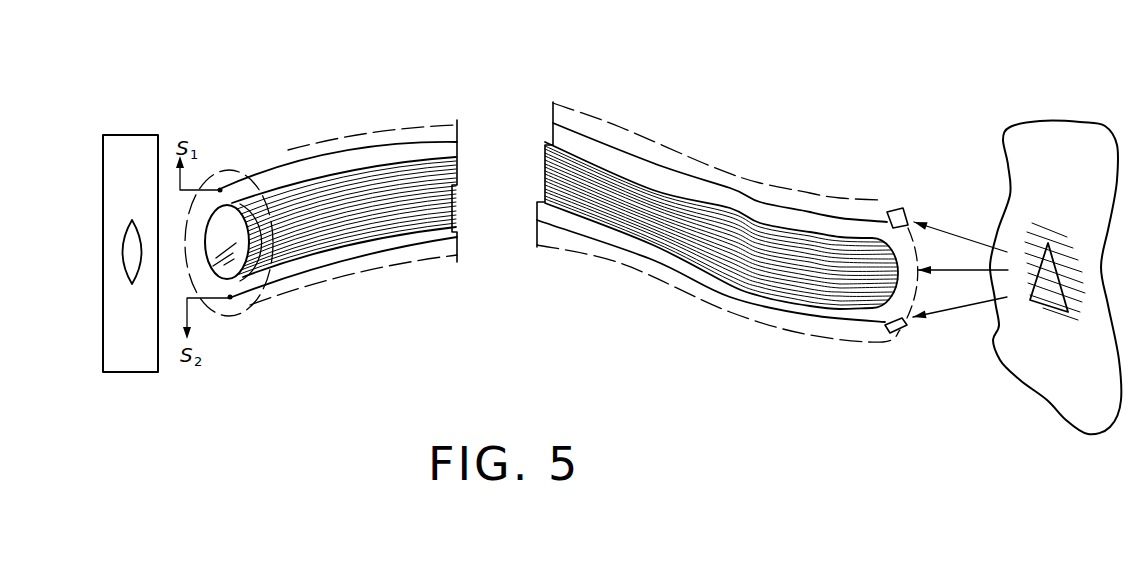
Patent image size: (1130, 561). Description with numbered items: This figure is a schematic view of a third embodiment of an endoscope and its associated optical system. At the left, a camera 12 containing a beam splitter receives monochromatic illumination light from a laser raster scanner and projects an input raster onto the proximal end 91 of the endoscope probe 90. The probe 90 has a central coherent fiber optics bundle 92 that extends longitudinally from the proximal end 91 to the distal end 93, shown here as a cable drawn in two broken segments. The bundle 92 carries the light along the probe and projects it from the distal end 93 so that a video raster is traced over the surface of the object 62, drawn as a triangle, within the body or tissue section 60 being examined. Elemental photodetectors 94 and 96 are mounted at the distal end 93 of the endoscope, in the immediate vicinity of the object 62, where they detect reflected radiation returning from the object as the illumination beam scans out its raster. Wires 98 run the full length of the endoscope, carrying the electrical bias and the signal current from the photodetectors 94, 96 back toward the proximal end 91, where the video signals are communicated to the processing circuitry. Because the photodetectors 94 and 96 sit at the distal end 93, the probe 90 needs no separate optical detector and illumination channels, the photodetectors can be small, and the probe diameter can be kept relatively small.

The camera 12 is at (143, 135).
The tissue section 60 is at (1068, 402).
The object 62 is at (997, 336).
The endoscope probe 90 is at (785, 123).
The proximal end 91 is at (238, 303).
The coherent fiber optics bundle 92 is at (602, 152).
The distal end 93 is at (920, 255).
The elemental photodetector 94 is at (901, 208).
The elemental photodetector 96 is at (901, 328).
The wires 98 is at (397, 145).